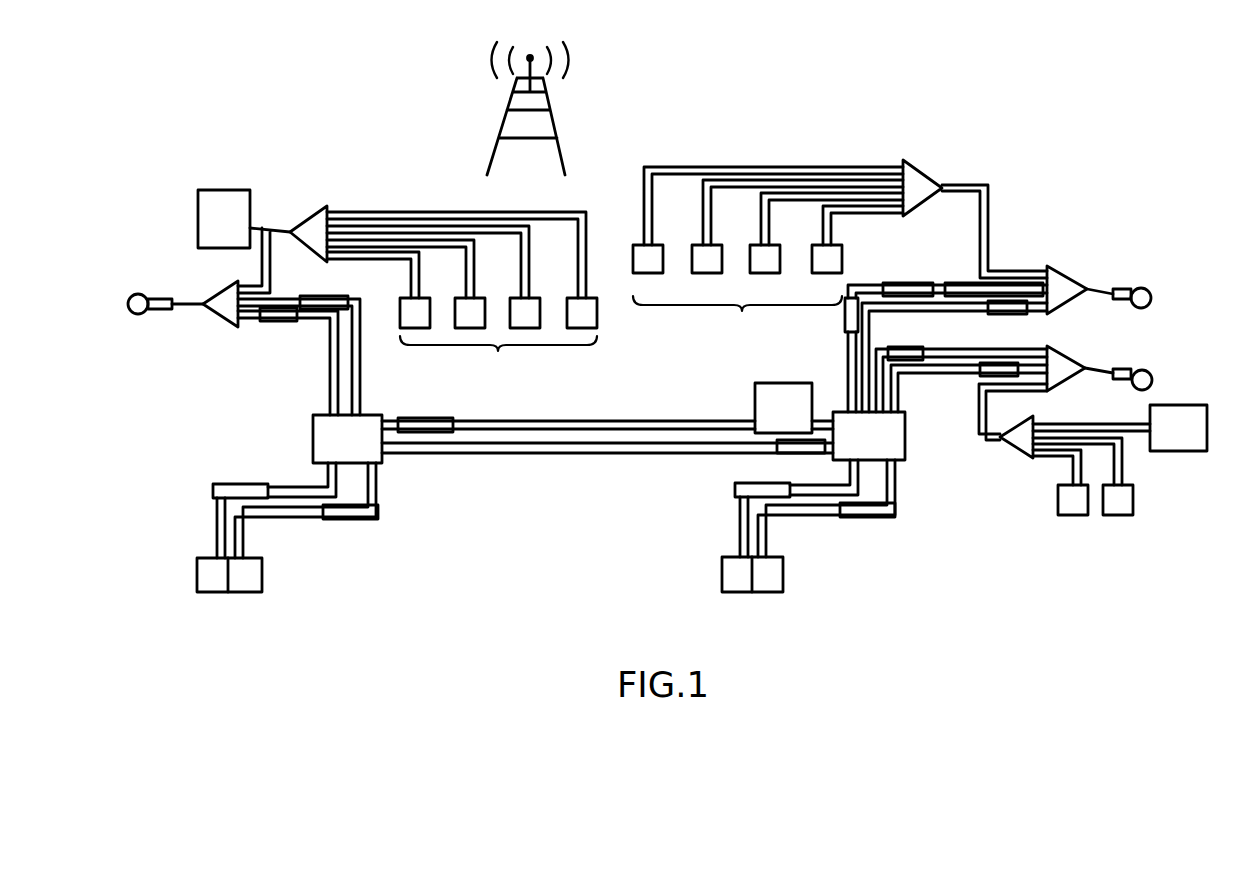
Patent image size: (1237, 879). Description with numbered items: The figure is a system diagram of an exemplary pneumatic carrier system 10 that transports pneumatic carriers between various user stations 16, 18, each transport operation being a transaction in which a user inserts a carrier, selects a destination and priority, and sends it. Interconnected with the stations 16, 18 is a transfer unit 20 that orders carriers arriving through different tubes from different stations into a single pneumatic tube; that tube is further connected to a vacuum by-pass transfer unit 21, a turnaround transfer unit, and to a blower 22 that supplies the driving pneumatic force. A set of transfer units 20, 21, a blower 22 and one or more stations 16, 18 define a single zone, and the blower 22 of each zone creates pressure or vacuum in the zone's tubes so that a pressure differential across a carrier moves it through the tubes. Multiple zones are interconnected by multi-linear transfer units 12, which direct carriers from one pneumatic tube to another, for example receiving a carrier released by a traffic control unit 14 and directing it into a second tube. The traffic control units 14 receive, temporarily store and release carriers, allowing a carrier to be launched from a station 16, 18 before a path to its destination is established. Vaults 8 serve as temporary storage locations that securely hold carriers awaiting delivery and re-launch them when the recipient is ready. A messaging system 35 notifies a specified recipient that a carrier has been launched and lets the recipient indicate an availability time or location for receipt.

The vault 8 is at (228, 192).
The pneumatic carrier system 10 is at (538, 524).
The multi-linear transfer unit 12 is at (385, 466).
The traffic control unit 14 is at (322, 297).
The user station 16 is at (264, 572).
The user station 18 is at (1163, 507).
The transfer unit 20 is at (302, 220).
The vacuum by-pass transfer unit 21 is at (243, 329).
The blower 22 is at (146, 313).
The messaging system 35 is at (558, 131).